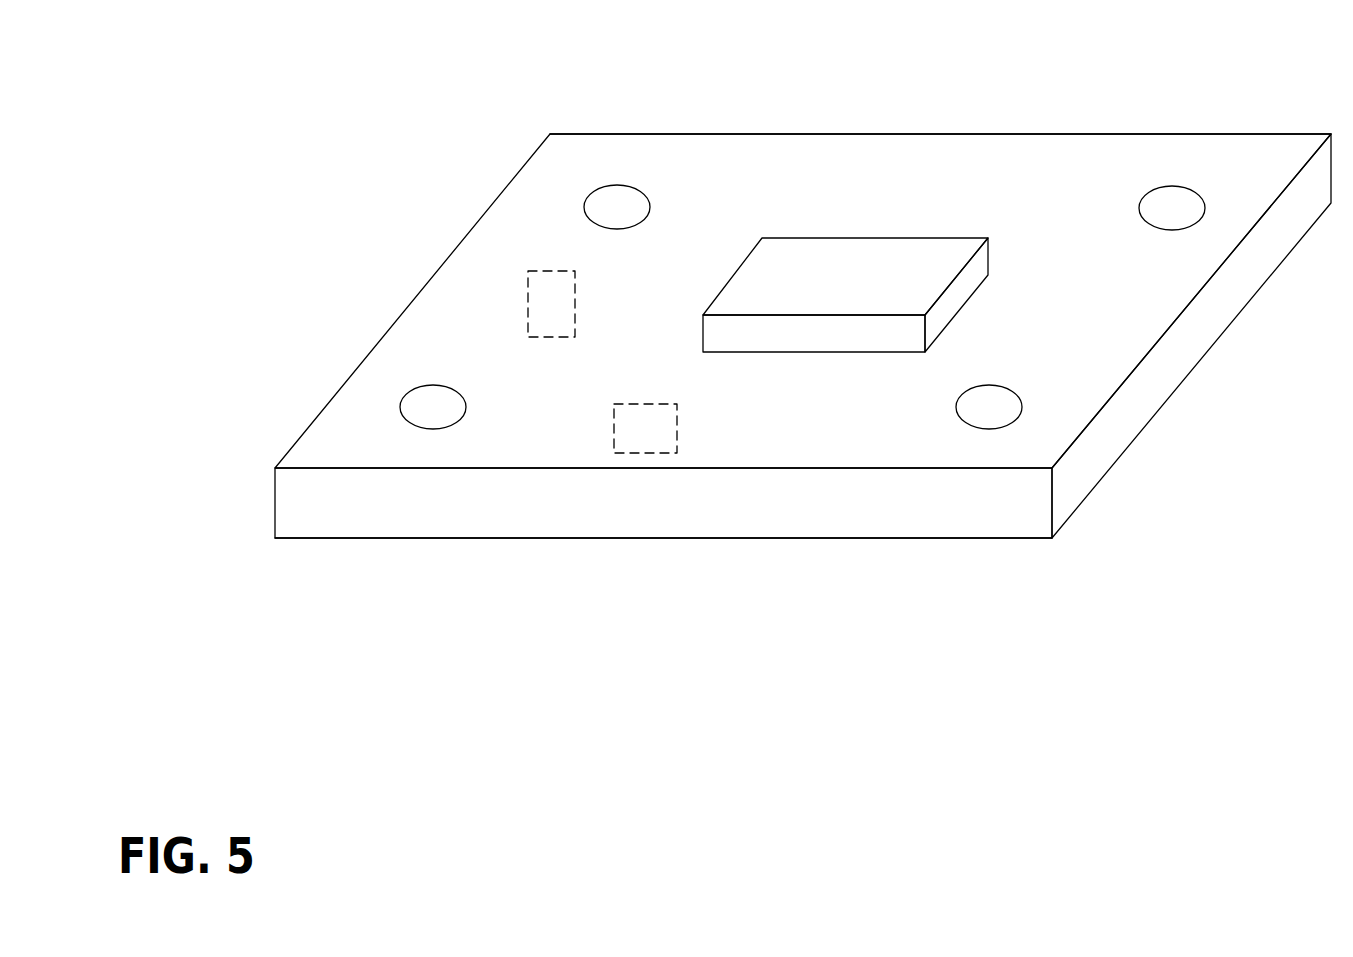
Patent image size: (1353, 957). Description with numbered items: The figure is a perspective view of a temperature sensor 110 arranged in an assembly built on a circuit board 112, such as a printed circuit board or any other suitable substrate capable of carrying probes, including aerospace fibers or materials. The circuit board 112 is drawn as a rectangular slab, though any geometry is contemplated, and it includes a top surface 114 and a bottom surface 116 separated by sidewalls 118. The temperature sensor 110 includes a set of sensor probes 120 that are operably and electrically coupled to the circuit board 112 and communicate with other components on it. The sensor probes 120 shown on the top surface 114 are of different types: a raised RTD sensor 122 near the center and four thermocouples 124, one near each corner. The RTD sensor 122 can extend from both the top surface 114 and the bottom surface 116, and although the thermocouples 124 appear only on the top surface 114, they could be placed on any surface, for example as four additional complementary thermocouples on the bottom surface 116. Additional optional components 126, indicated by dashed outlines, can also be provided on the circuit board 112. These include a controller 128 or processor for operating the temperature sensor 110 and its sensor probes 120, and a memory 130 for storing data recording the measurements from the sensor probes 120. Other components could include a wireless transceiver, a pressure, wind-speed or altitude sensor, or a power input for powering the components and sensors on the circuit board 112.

The temperature sensor 110 is at (232, 191).
The circuit board 112 is at (858, 173).
The top surface 114 is at (977, 190).
The bottom surface 116 is at (827, 540).
The sidewalls 118 is at (1152, 382).
The sensor probes 120 is at (786, 312).
The RTD sensor 122 is at (883, 272).
The thermocouple 124 is at (588, 197).
The optional components 126 is at (554, 417).
The controller 128 is at (645, 453).
The memory 130 is at (553, 268).